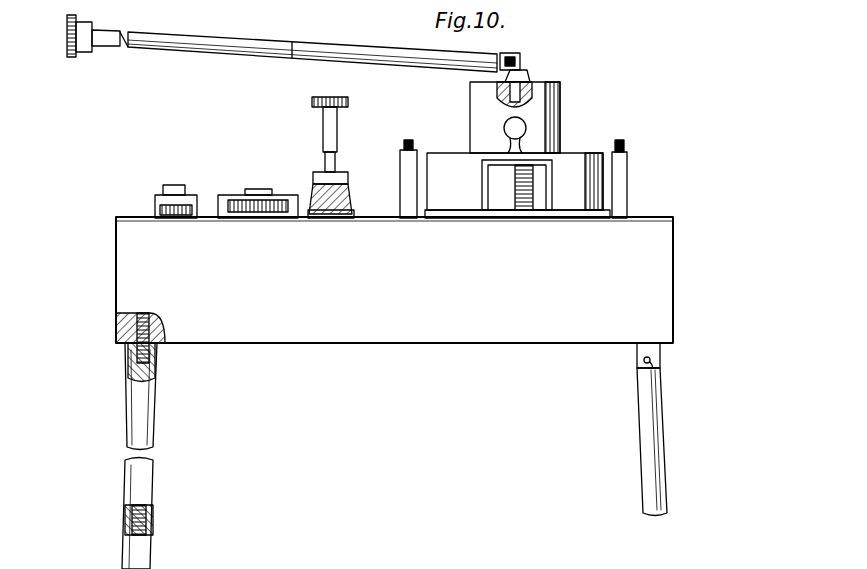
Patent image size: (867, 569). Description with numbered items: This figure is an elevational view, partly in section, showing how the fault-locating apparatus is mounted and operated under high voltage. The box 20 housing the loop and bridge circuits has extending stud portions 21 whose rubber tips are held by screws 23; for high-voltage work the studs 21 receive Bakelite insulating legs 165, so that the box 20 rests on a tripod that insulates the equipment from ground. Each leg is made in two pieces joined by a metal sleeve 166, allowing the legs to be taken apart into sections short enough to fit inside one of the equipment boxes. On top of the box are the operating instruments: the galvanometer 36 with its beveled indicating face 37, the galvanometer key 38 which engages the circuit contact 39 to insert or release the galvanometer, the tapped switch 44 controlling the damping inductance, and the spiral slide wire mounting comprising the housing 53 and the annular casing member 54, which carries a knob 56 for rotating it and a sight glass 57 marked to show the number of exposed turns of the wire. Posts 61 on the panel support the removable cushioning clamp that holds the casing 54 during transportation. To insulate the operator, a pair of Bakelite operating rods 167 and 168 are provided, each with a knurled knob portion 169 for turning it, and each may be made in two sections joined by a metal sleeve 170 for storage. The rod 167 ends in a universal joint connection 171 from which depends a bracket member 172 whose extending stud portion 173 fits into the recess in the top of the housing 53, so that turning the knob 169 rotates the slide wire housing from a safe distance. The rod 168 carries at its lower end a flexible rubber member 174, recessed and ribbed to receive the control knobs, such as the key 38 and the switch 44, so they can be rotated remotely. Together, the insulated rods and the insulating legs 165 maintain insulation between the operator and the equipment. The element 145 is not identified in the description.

The box 20 is at (672, 252).
The stud portions 21 is at (157, 347).
The screws 23 is at (125, 362).
The insulating legs 165 is at (157, 422).
The metal sleeve 166 is at (153, 522).
The operating rod 167 is at (266, 58).
The operating rod 168 is at (337, 132).
The knurled knob portion 169 is at (68, 50).
The metal sleeve 170 is at (300, 48).
The universal joint connection 171 is at (535, 56).
The bracket member 172 is at (530, 74).
The stud portion 173 is at (497, 94).
The housing 53 is at (555, 116).
The annular casing member 54 is at (586, 153).
The knob 56 is at (518, 125).
The sight glass 57 is at (500, 205).
The posts 61 is at (408, 162).
The flexible rubber member 174 is at (348, 190).
The base 145 is at (348, 206).
The galvanometer 36 is at (240, 195).
The indicating face 37 is at (292, 195).
The galvanometer key 38 is at (163, 195).
The circuit contact 39 is at (160, 212).
The tapped switch 44 is at (190, 195).